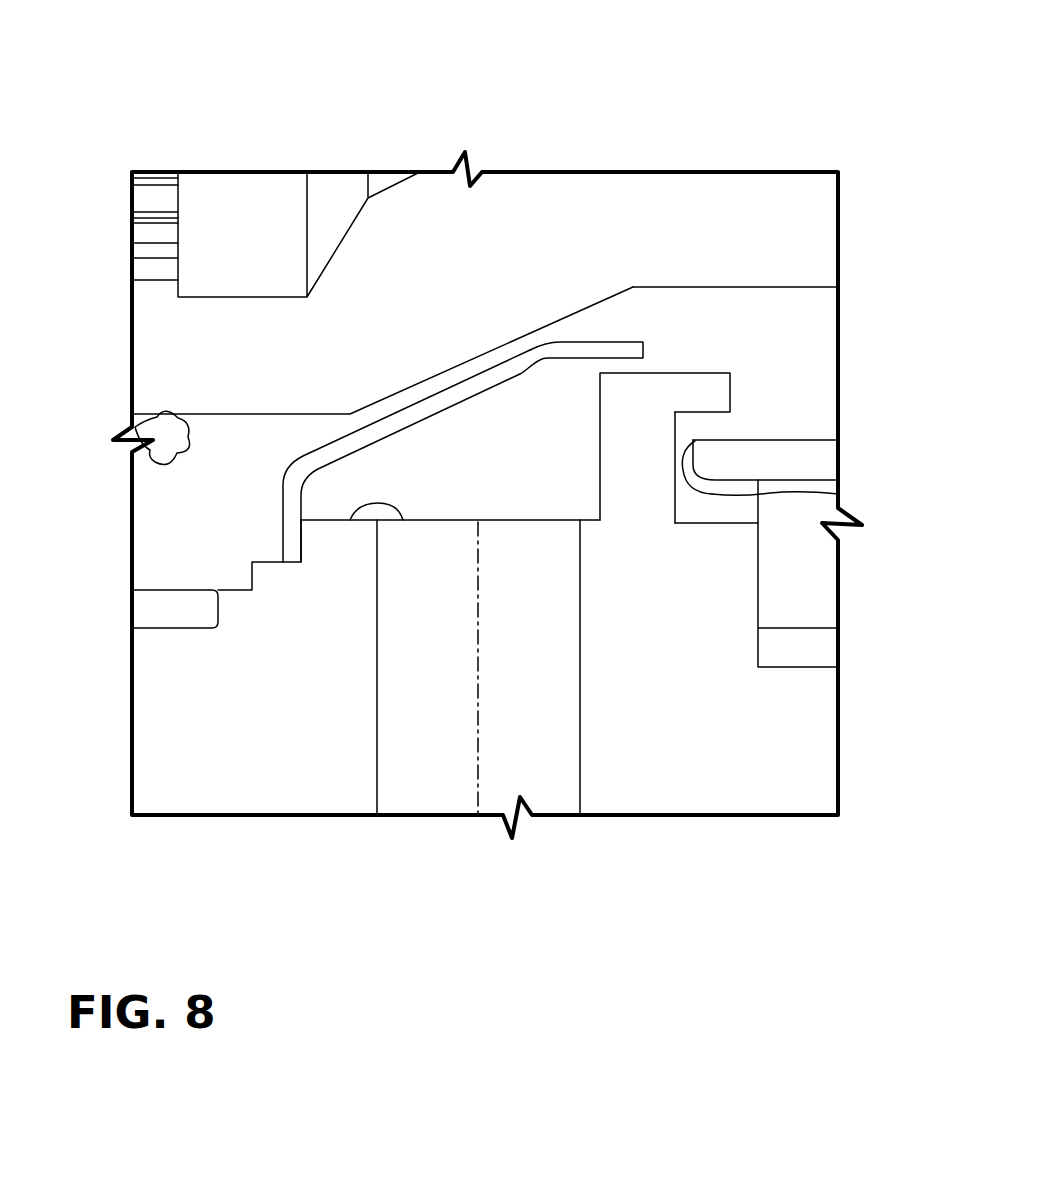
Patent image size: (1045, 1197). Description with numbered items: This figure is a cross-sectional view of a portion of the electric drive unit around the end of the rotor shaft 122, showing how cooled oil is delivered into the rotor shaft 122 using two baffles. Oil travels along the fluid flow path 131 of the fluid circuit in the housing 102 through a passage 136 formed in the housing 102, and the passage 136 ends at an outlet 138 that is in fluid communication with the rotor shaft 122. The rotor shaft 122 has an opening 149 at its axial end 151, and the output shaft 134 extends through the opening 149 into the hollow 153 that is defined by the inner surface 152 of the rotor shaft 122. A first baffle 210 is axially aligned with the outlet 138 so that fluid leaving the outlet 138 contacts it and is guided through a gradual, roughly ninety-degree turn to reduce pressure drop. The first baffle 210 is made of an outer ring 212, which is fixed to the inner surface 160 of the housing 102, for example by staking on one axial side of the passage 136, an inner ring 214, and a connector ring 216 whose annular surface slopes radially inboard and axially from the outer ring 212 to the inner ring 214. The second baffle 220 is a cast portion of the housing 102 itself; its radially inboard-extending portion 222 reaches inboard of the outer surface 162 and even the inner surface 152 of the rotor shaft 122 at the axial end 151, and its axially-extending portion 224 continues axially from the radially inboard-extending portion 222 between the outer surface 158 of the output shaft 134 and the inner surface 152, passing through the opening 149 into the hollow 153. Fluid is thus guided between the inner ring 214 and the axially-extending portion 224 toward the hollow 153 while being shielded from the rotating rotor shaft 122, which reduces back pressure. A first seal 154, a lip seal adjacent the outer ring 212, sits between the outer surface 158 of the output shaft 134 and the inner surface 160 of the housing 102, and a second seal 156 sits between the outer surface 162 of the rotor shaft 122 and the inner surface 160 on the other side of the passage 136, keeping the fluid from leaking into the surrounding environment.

The housing 102 is at (208, 712).
The rotor shaft 122 is at (788, 452).
The fluid flow path 131 is at (543, 767).
The output shaft 134 is at (258, 332).
The passage 136 is at (375, 720).
The outlet 138 is at (350, 520).
The opening 149 is at (677, 428).
The axial end 151 is at (838, 494).
The inner surface 152 is at (765, 438).
The hollow 153 is at (713, 387).
The first seal 154 is at (155, 418).
The second seal 156 is at (805, 527).
The outer surface 158 is at (390, 392).
The inner surface 160 is at (263, 555).
The outer surface 162 is at (810, 477).
The first baffle 210 is at (463, 373).
The outer ring 212 is at (287, 480).
The inner ring 214 is at (598, 340).
The connector ring 216 is at (517, 362).
The second baffle 220 is at (668, 358).
The radially inboard-extending portion 222 is at (638, 475).
The axially-extending portion 224 is at (800, 322).